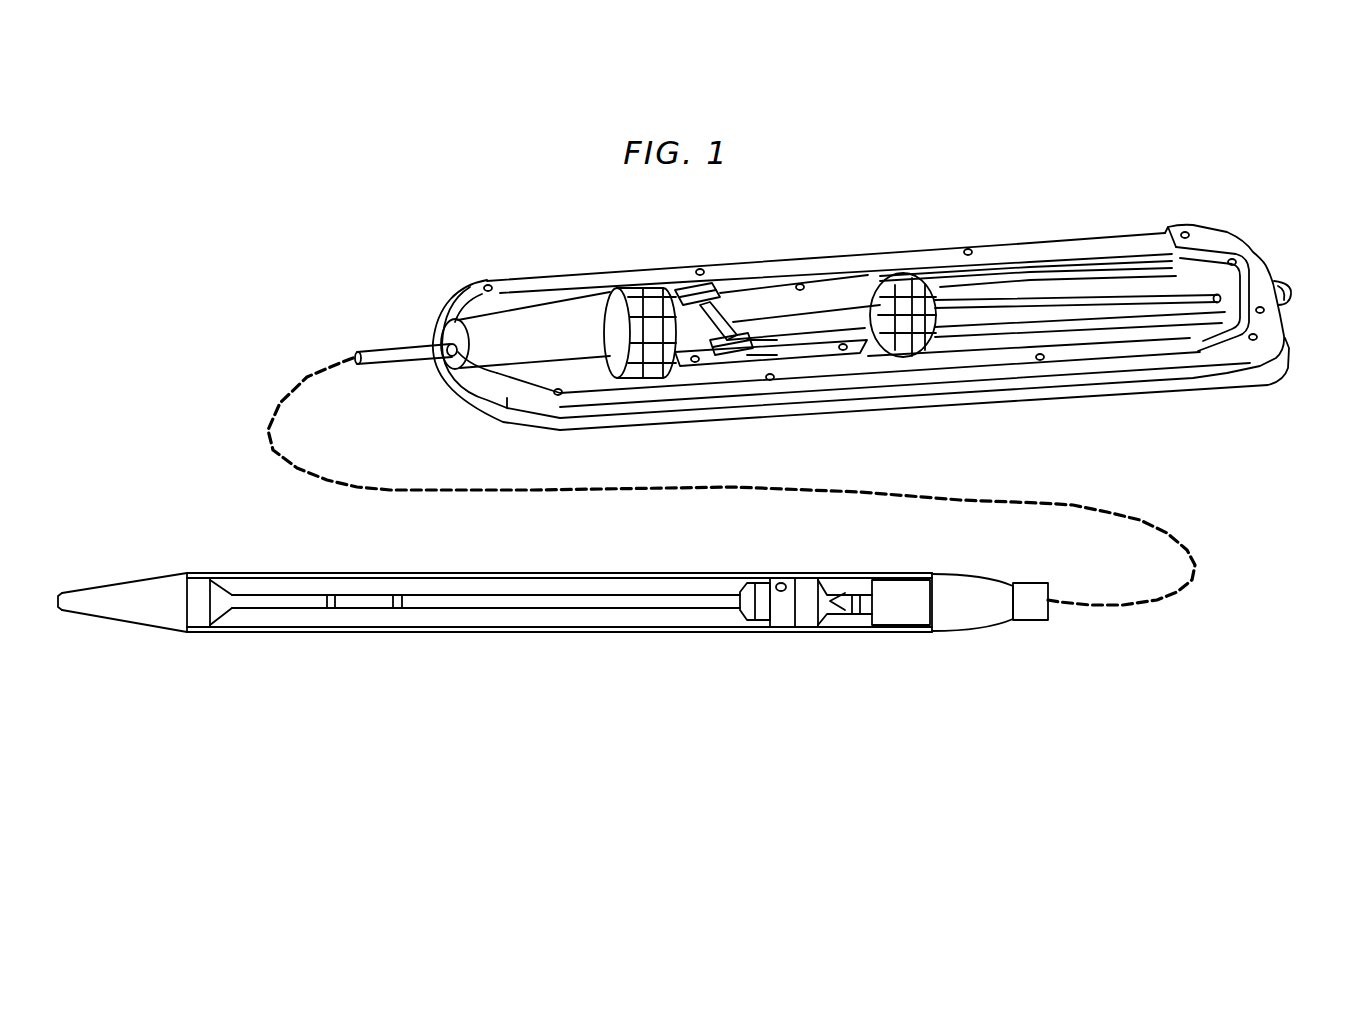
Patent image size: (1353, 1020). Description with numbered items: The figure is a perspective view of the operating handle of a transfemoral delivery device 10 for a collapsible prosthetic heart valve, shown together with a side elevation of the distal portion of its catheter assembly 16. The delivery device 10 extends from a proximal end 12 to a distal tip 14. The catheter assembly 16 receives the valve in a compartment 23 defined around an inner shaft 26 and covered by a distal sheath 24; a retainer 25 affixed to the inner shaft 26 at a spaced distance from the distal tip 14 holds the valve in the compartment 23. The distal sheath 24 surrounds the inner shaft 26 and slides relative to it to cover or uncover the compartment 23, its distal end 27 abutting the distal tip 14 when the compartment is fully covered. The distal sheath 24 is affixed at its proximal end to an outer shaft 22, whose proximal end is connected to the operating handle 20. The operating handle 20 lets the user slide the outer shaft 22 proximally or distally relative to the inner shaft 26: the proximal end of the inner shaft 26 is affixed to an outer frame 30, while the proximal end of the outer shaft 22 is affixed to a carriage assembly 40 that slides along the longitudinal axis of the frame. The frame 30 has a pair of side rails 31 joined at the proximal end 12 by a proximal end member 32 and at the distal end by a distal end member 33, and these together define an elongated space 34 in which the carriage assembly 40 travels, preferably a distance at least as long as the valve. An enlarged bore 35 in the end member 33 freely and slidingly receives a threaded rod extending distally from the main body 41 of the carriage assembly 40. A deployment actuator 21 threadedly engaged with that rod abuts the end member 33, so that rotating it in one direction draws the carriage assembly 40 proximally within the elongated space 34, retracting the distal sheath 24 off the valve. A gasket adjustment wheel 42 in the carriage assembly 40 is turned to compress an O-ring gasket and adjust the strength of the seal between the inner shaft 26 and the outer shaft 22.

The transfemoral delivery device 10 is at (289, 263).
The proximal end 12 is at (1292, 358).
The distal tip 14 is at (57, 610).
The catheter assembly 16 is at (431, 661).
The operating handle 20 is at (998, 220).
The deployment actuator 21 is at (622, 294).
The outer shaft 22 is at (399, 366).
The compartment 23 is at (509, 573).
The distal sheath 24 is at (556, 632).
The retainer 25 is at (784, 584).
The inner shaft 26 is at (1123, 315).
The distal end 27 is at (187, 572).
The outer frame 30 is at (890, 243).
The side rails 31 is at (537, 282).
The proximal end member 32 is at (1228, 222).
The distal end member 33 is at (442, 325).
The elongated space 34 is at (1032, 342).
The enlarged bore 35 is at (503, 327).
The carriage assembly 40 is at (747, 278).
The main body 41 is at (807, 353).
The gasket adjustment wheel 42 is at (913, 353).